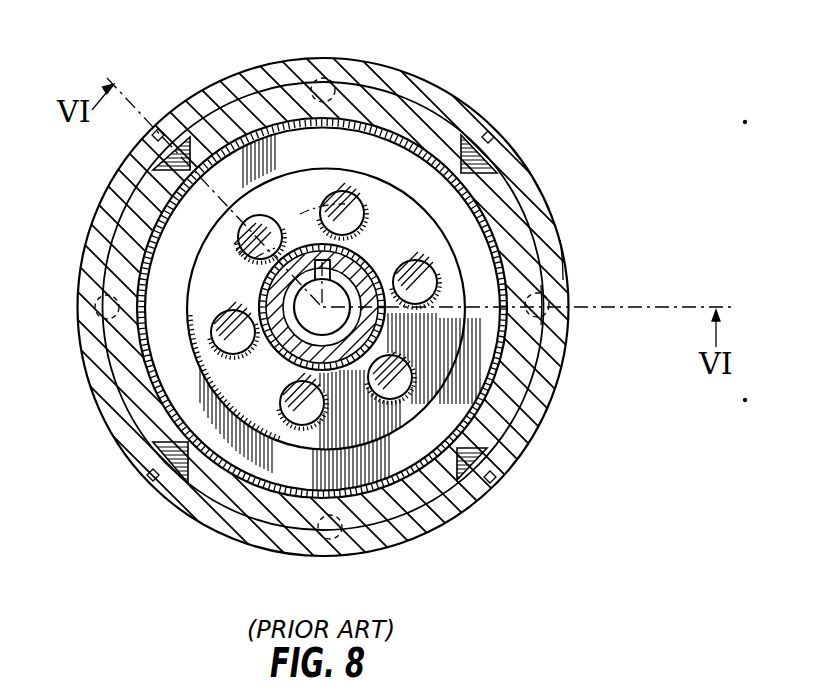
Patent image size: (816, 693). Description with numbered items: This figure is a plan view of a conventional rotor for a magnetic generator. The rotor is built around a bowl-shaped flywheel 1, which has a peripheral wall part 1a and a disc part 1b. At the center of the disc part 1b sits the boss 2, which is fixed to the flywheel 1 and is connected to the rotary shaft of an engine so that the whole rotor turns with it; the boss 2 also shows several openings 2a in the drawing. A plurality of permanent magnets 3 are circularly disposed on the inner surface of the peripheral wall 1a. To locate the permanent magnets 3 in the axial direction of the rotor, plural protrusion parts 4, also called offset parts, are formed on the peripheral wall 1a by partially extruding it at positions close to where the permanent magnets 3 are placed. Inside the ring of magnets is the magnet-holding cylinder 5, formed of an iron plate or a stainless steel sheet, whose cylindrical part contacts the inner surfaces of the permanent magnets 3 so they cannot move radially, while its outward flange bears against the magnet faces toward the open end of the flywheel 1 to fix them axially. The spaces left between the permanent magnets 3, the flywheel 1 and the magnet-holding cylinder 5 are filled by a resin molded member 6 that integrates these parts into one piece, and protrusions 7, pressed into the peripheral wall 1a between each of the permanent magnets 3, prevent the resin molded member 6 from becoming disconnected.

The flywheel 1 is at (343, 60).
The peripheral wall part 1a is at (552, 268).
The disc part 1b is at (484, 318).
The boss 2 is at (353, 272).
The rotor hole 2a is at (238, 308).
The permanent magnets 3 is at (218, 124).
The protrusion parts 4 is at (320, 92).
The magnet-holding cylinder 5 is at (163, 352).
The resin molded member 6 is at (180, 142).
The protrusions 7 is at (158, 146).